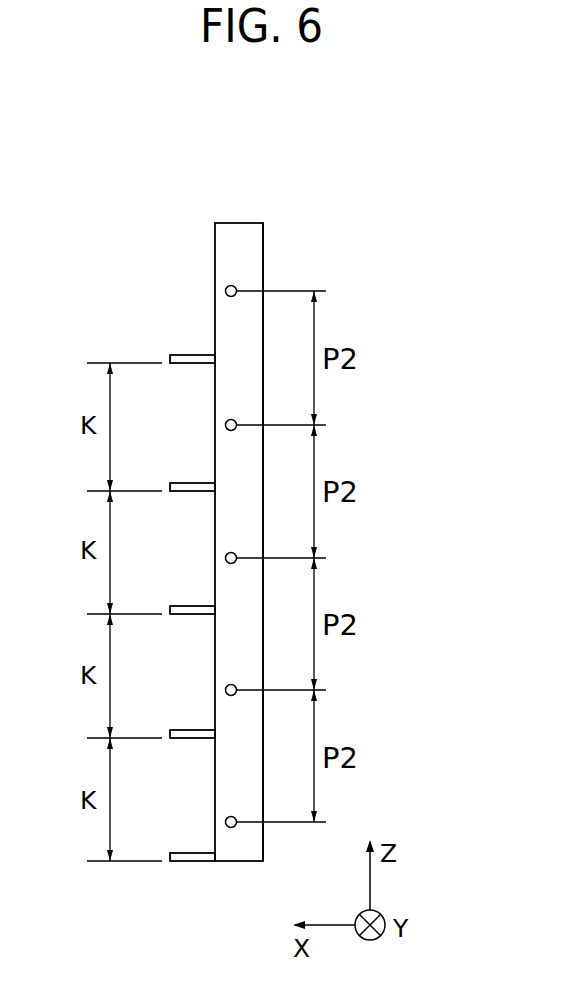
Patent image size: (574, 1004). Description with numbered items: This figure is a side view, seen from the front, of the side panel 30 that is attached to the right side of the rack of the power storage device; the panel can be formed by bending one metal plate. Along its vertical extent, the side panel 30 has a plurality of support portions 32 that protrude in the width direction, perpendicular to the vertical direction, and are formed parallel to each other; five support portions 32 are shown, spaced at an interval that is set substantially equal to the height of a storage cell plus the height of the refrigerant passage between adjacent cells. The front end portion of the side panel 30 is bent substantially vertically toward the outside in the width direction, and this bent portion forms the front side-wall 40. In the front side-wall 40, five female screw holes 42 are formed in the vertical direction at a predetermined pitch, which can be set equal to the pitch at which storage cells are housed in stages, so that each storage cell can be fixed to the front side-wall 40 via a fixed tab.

The side panel 30 is at (264, 221).
The front side-wall 40 is at (264, 248).
The support portion 32 is at (182, 355).
The female screw hole 42 is at (225, 425).